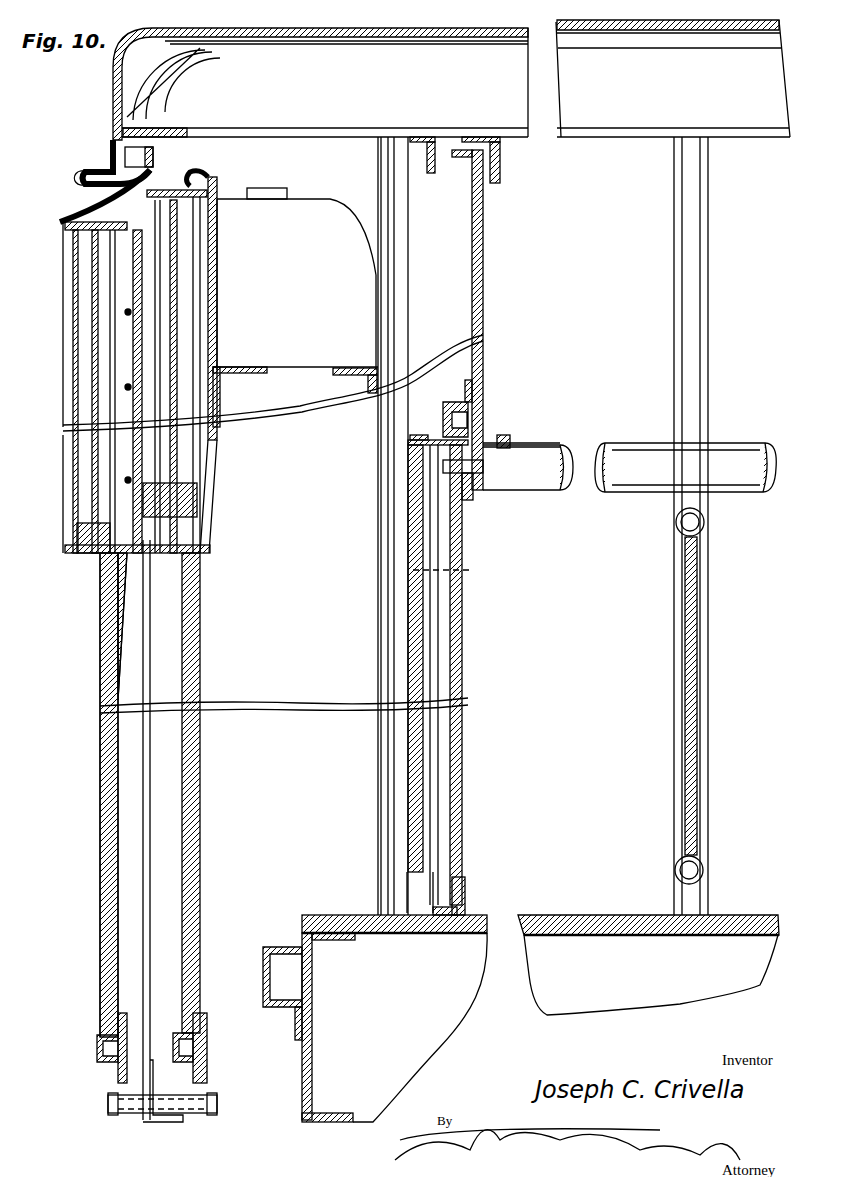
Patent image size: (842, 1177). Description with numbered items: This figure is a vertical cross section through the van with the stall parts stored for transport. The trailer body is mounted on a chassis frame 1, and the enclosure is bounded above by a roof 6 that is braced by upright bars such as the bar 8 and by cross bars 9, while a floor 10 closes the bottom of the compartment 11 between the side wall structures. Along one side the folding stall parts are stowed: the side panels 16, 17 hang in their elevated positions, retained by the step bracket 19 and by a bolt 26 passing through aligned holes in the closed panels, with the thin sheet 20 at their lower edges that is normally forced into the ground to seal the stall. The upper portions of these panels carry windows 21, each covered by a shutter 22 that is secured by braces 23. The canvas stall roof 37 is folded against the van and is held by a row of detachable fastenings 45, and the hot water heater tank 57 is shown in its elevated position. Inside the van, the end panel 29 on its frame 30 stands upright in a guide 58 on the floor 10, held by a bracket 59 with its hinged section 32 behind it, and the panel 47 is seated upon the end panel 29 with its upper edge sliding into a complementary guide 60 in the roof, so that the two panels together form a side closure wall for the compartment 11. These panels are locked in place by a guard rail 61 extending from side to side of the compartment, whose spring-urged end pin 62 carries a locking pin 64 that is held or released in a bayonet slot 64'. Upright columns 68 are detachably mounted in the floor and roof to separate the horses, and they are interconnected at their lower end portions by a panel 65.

The chassis frame 1 is at (340, 1122).
The roof 6 is at (548, 22).
The upright bar 8 is at (377, 307).
The cross bar 9 is at (789, 96).
The floor 10 is at (770, 916).
The compartment 11 is at (670, 847).
The panel 16 is at (93, 591).
The panel 17 is at (176, 613).
The step bracket 19 is at (100, 1060).
The thin sheet 20 is at (126, 1120).
The window 21 is at (178, 322).
The shutter 22 is at (140, 505).
The brace 23 is at (160, 345).
The bolt 26 is at (107, 1110).
The end panel 29 is at (462, 670).
The frame 30 is at (470, 490).
The section 32 is at (415, 636).
The roof 37 is at (165, 280).
The detachable fastening 45 is at (153, 157).
The panel 47 is at (490, 326).
The hot water heater tank 57 is at (323, 215).
The guide 58 is at (466, 882).
The bracket 59 is at (468, 571).
The guide 60 is at (500, 183).
The guard rail 61 is at (727, 443).
The pin 62 is at (480, 472).
The locking pin 64 is at (521, 426).
The bayonet slot 64' is at (531, 450).
The panel 65 is at (690, 676).
The upright column 68 is at (706, 366).